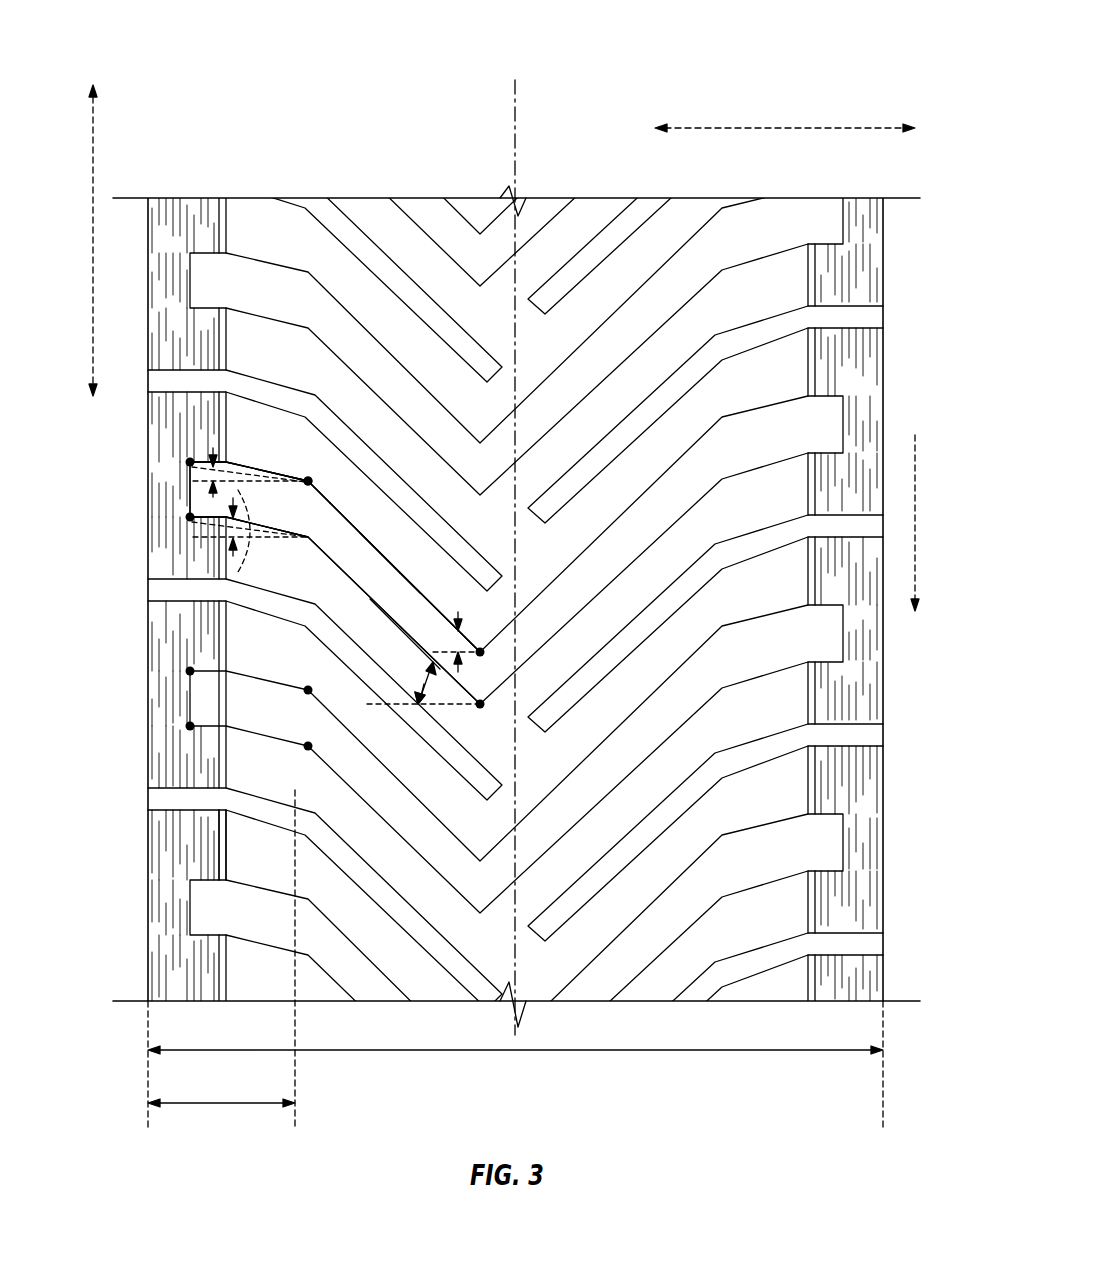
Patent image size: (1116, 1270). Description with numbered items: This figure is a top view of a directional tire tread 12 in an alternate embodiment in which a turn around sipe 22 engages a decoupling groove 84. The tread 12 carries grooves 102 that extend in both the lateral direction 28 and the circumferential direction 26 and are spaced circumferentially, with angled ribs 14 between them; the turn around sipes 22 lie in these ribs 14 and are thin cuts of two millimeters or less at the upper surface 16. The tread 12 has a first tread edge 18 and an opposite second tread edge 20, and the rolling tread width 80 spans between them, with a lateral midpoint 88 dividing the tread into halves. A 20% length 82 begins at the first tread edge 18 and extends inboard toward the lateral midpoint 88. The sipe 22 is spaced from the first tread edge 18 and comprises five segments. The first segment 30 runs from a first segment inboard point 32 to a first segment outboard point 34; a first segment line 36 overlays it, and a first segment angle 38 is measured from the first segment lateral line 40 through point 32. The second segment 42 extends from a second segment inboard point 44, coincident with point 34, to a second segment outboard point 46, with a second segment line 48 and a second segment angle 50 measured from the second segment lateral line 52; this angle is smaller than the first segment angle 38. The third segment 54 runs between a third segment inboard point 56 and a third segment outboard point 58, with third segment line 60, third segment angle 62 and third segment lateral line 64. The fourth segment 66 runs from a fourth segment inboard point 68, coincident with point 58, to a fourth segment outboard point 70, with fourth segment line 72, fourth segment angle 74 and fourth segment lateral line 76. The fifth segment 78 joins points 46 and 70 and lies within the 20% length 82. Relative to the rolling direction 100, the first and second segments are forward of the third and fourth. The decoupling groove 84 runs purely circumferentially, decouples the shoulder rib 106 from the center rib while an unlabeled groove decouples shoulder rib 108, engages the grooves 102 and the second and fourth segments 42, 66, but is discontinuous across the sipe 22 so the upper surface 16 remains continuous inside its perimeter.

The tread 12 is at (852, 54).
The ribs 14 is at (172, 688).
The upper surface 16 is at (262, 222).
The first tread edge 18 is at (148, 903).
The second tread edge 20 is at (886, 870).
The turn around sipe 22 is at (422, 594).
The circumferential direction 26 is at (93, 238).
The lateral direction 28 is at (790, 128).
The first segment 30 is at (373, 600).
The first segment inboard point 32 is at (482, 704).
The first segment outboard point 34 is at (335, 557).
The first segment line 36 is at (382, 607).
The first segment angle 38 is at (420, 677).
The first segment lateral line 40 is at (430, 707).
The second segment 42 is at (247, 512).
The second segment inboard point 44 is at (307, 540).
The second segment outboard point 46 is at (189, 517).
The second segment line 48 is at (250, 534).
The second segment angle 50 is at (222, 565).
The second segment lateral line 52 is at (220, 548).
The third segment 54 is at (374, 549).
The third segment inboard point 56 is at (482, 654).
The third segment outboard point 58 is at (309, 481).
The third segment line 60 is at (347, 522).
The third segment angle 62 is at (462, 606).
The third segment lateral line 64 is at (450, 647).
The fourth segment 66 is at (266, 479).
The fourth segment inboard point 68 is at (301, 481).
The fourth segment outboard point 70 is at (189, 461).
The fourth segment line 72 is at (242, 476).
The fourth segment angle 74 is at (212, 445).
The fourth segment lateral line 76 is at (207, 490).
The fifth segment 78 is at (189, 490).
The rolling tread width 80 is at (525, 1052).
The 20% length 82 is at (228, 1105).
The decoupling groove 84 is at (220, 835).
The lateral midpoint 88 is at (520, 126).
The rolling direction 100 is at (915, 515).
The grooves 102 is at (160, 372).
The shoulder rib 106 is at (158, 295).
The shoulder rib 108 is at (865, 268).